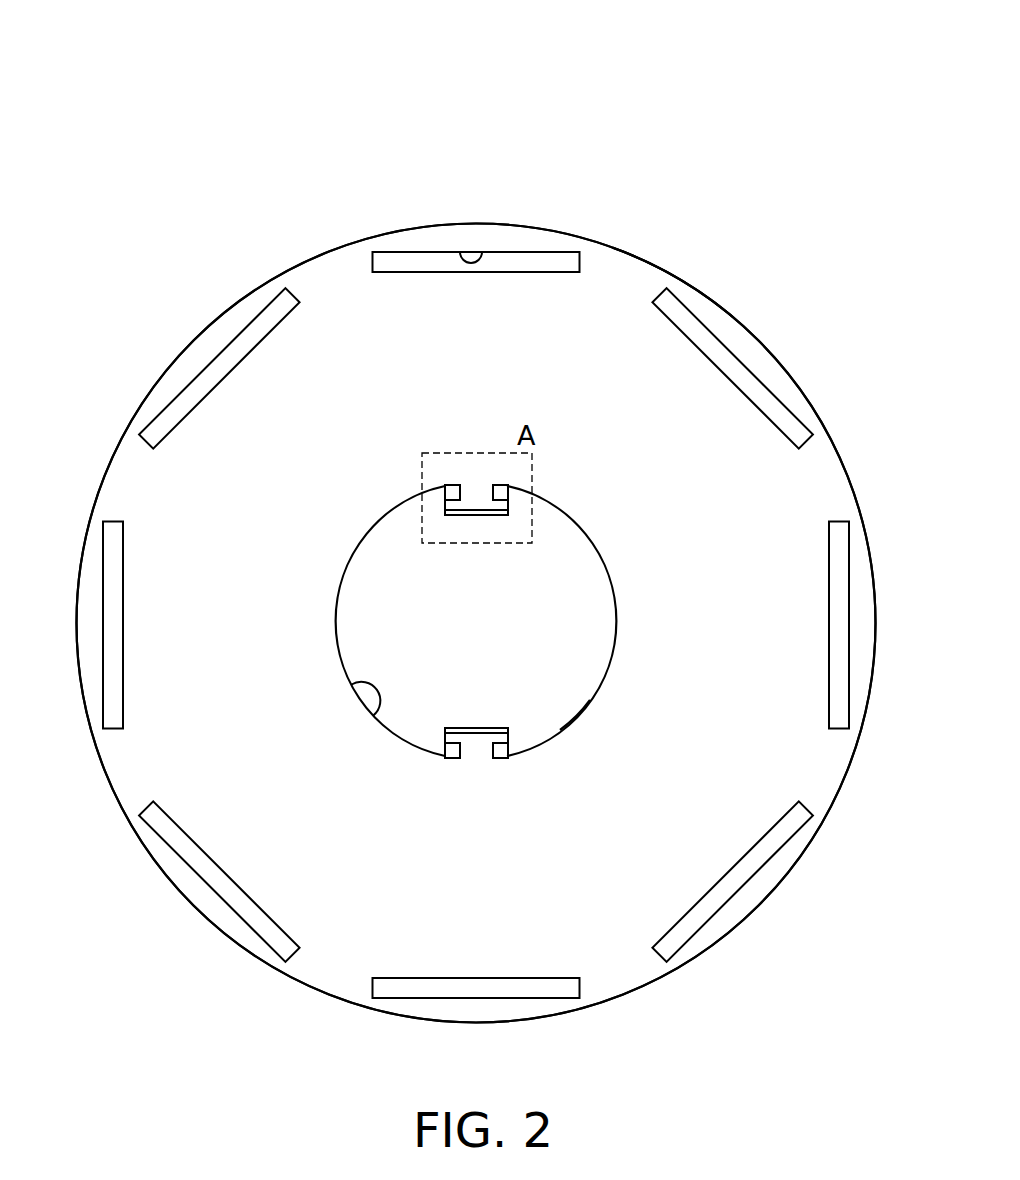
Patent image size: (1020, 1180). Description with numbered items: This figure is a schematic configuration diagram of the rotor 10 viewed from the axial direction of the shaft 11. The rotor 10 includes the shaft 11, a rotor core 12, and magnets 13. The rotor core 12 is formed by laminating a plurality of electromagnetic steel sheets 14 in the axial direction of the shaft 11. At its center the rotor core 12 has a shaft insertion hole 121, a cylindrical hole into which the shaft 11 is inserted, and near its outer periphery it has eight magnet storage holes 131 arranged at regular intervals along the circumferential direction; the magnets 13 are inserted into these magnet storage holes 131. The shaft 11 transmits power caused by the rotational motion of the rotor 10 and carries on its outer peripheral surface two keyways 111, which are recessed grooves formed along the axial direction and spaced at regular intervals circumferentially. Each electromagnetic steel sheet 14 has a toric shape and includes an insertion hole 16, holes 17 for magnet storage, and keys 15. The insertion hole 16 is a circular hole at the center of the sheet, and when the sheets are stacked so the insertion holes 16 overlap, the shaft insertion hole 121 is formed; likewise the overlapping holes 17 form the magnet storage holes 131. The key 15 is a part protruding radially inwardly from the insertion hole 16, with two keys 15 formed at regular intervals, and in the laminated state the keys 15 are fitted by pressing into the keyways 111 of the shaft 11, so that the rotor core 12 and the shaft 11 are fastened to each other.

The rotor 10 is at (498, 106).
The shaft 11 is at (607, 582).
The keyway 111 is at (473, 737).
The rotor core 12 is at (332, 248).
The shaft insertion hole 121 is at (590, 700).
The magnet 13 is at (733, 370).
The magnet storage hole 131 is at (545, 252).
The electromagnetic steel sheet 14 is at (608, 300).
The key 15 is at (473, 500).
The insertion hole 16 is at (373, 717).
The hole for magnet storage 17 is at (481, 252).